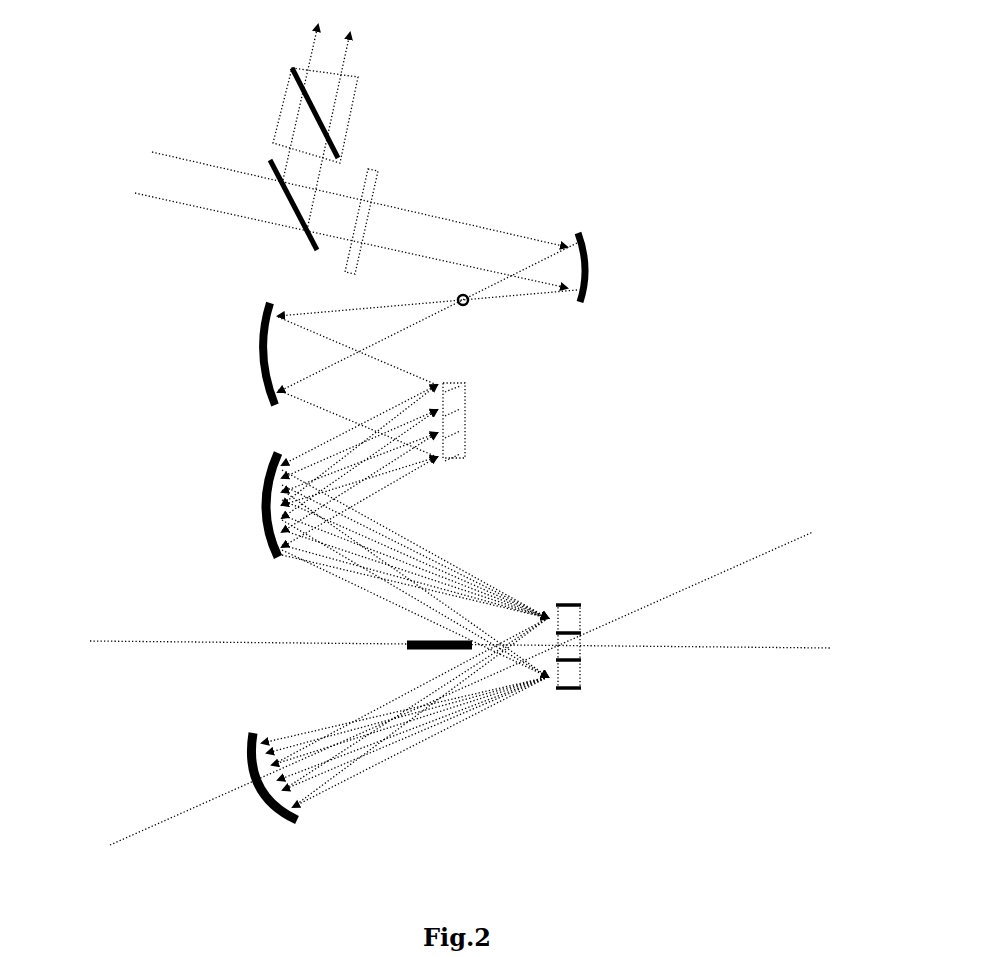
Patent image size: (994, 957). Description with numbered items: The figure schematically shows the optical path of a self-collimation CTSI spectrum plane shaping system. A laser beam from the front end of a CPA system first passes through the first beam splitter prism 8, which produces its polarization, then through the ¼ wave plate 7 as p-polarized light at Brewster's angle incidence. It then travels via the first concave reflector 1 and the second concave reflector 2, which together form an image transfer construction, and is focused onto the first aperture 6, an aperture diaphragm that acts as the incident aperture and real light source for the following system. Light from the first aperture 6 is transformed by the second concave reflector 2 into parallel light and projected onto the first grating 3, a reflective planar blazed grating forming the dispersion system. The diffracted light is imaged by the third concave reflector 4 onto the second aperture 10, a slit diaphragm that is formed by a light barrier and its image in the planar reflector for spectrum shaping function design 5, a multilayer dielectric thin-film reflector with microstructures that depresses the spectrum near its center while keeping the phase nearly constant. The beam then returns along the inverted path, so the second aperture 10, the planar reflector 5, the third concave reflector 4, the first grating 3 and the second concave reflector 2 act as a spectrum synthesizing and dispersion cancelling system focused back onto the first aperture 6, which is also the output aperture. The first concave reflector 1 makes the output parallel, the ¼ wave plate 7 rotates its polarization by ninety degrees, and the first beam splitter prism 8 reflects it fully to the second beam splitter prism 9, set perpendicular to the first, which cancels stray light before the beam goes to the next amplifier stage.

The first concave reflector 1 is at (607, 267).
The second concave reflector 2 is at (238, 354).
The first grating 3 is at (476, 422).
The third concave reflector 4 is at (240, 789).
The planar reflector for spectrum shaping function design 5 is at (587, 646).
The first aperture 6 is at (471, 315).
The ¼ wave plate 7 is at (376, 211).
The first beam splitter prism 8 is at (265, 216).
The second beam splitter prism 9 is at (301, 110).
The second aperture 10 is at (406, 645).